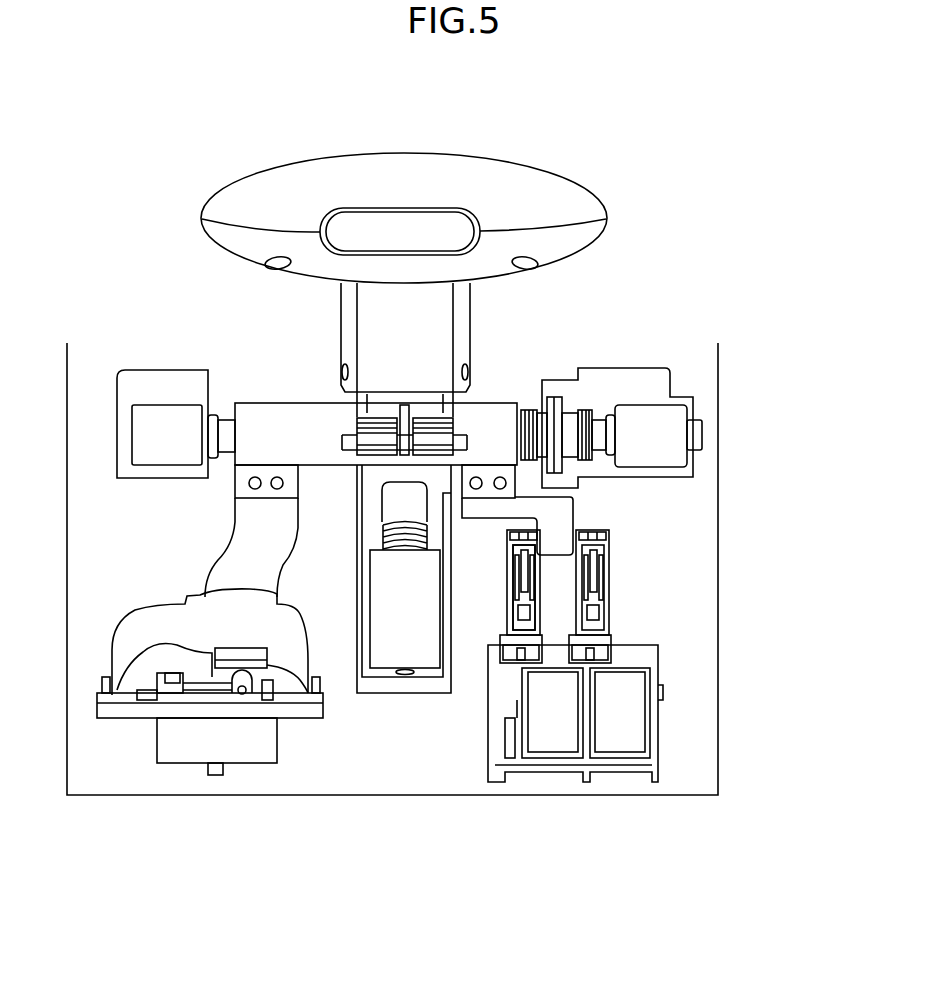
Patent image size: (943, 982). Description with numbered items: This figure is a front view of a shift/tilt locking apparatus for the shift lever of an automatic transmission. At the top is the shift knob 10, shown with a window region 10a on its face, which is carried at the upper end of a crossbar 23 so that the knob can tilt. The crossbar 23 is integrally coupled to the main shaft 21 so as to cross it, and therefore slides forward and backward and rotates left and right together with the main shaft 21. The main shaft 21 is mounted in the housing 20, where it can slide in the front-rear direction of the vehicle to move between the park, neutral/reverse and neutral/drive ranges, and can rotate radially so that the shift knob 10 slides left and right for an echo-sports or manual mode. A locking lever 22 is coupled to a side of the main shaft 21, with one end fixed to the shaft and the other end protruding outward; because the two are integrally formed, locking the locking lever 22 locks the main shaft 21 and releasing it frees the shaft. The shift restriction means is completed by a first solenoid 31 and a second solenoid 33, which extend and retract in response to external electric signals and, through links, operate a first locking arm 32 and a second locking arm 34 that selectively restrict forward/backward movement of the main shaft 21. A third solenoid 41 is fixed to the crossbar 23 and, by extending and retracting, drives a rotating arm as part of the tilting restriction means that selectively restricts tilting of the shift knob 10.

The shift knob 10 is at (508, 183).
The window of head unit 10a is at (403, 232).
The housing 20 is at (722, 650).
The main shaft 21 is at (490, 418).
The locking lever 22 is at (560, 522).
The crossbar 23 is at (370, 342).
The first solenoid 31 is at (617, 727).
The first locking arm 32 is at (610, 585).
The second solenoid 33 is at (553, 727).
The second locking arm 34 is at (510, 588).
The third solenoid 41 is at (395, 635).